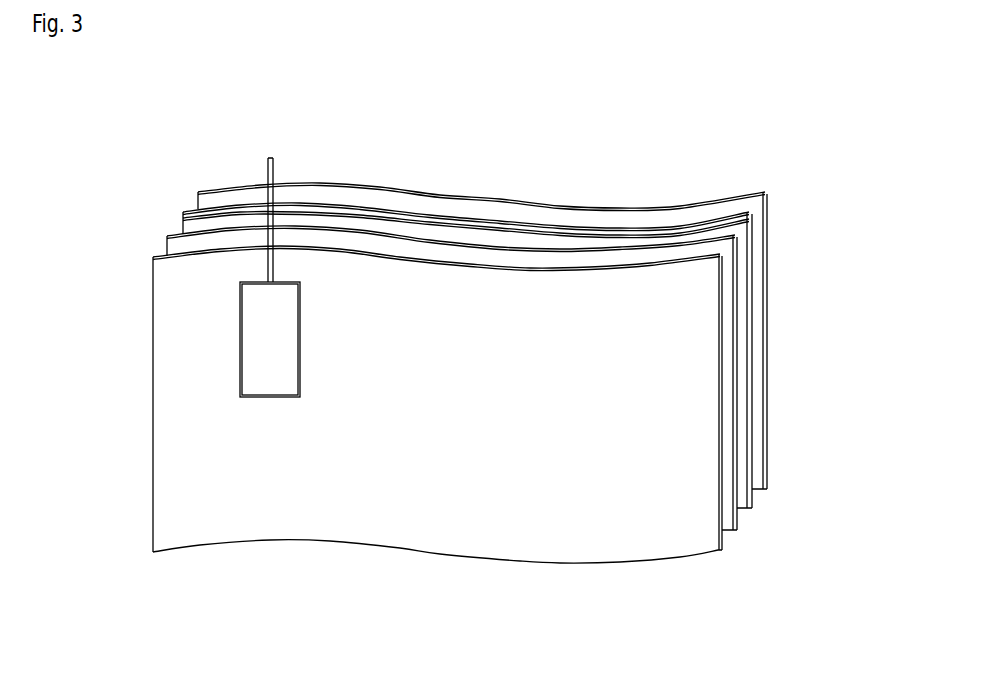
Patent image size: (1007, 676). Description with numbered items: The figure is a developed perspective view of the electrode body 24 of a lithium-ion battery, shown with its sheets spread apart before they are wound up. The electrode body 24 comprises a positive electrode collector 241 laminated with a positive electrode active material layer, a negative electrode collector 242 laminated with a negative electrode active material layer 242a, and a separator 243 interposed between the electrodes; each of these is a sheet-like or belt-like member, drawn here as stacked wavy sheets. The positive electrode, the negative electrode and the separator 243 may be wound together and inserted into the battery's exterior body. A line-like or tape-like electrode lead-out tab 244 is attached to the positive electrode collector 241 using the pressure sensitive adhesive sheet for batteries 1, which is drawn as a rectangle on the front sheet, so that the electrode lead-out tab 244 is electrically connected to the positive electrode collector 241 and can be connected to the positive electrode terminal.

The pressure sensitive adhesive sheet for batteries 1 is at (246, 354).
The electrode body 24 is at (510, 376).
The positive electrode collector 241 is at (609, 563).
The negative electrode collector 242 is at (576, 228).
The negative electrode active material layer 242a is at (658, 235).
The separator 243 is at (495, 240).
The electrode lead-out tab 244 is at (275, 167).